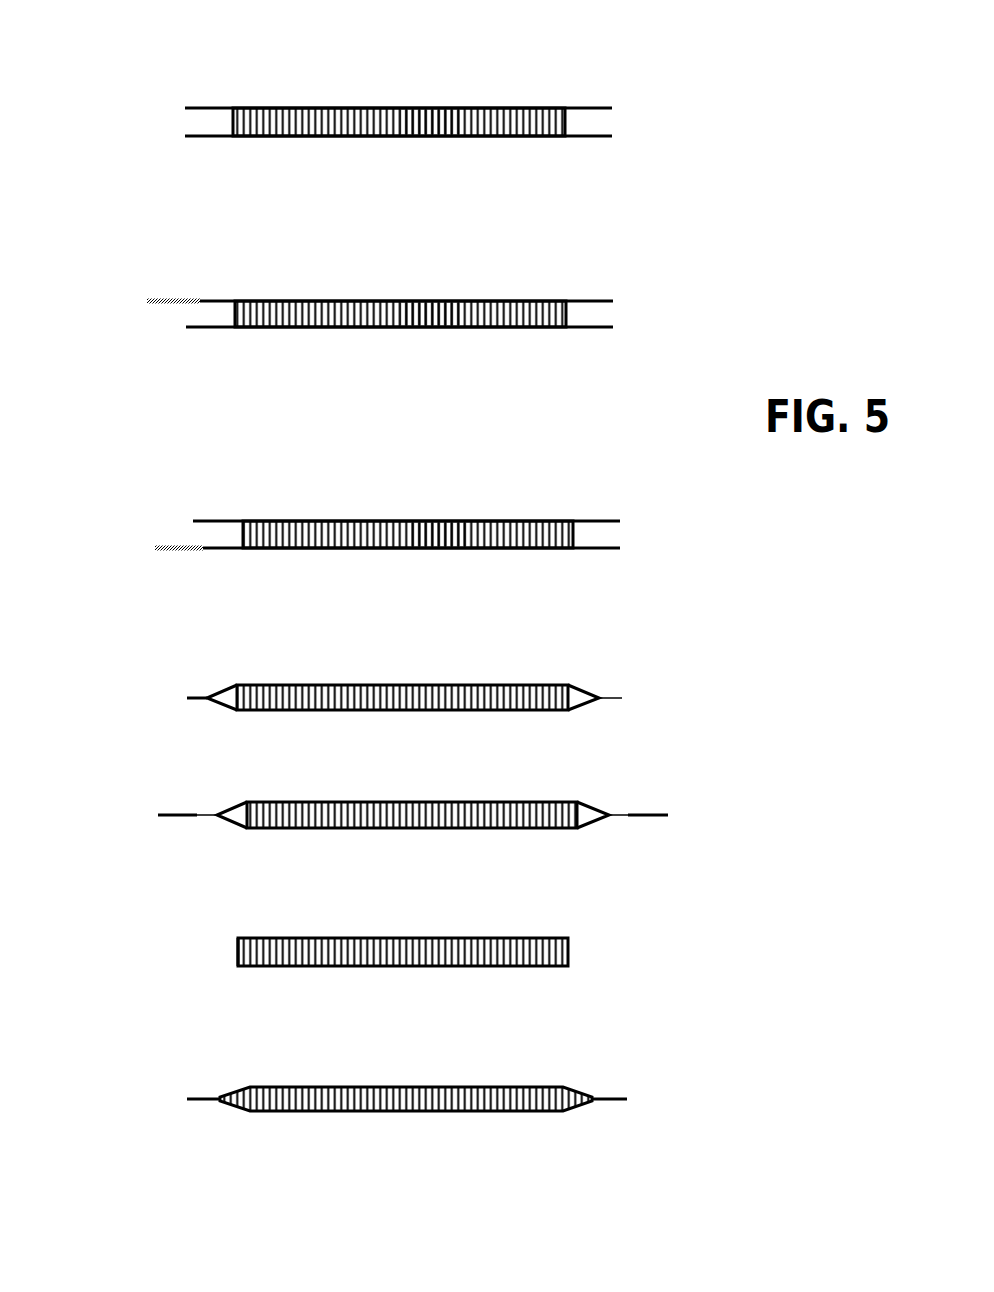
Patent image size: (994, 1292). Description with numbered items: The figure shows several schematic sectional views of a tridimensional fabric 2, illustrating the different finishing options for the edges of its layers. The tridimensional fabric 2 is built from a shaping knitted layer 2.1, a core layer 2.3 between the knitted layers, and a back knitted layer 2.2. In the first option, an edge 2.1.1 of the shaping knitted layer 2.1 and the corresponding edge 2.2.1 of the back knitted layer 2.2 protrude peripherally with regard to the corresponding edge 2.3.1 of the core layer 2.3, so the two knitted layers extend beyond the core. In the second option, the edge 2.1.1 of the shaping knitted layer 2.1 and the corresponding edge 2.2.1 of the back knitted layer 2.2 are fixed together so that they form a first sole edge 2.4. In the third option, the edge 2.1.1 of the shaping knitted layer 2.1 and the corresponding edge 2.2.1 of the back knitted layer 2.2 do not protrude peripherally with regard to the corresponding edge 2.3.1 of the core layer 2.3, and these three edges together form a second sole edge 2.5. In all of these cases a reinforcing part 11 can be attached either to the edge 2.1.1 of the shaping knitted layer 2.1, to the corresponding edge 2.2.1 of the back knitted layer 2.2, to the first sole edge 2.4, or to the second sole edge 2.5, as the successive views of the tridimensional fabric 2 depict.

The tridimensional fabric 2 is at (535, 52).
The shaping knitted layer 2.1 is at (338, 108).
The edge of the shaping knitted layer 2.1.1 is at (203, 108).
The back knitted layer 2.2 is at (337, 136).
The edge of the back knitted layer 2.2.1 is at (203, 136).
The core layer 2.3 is at (407, 108).
The edge of the core layer 2.3.1 is at (565, 123).
The first sole edge 2.4 is at (187, 699).
The second sole edge 2.5 is at (238, 951).
The reinforcing part 11 is at (165, 302).